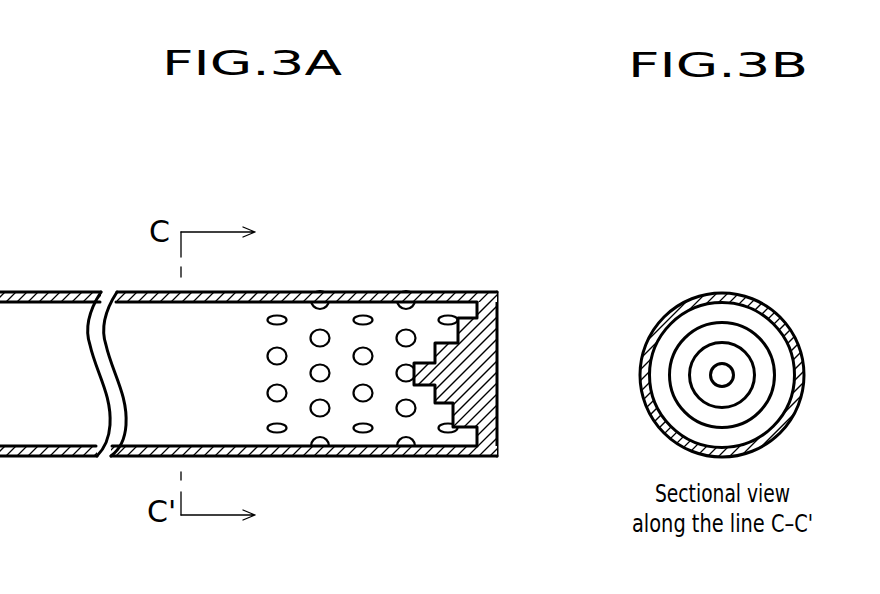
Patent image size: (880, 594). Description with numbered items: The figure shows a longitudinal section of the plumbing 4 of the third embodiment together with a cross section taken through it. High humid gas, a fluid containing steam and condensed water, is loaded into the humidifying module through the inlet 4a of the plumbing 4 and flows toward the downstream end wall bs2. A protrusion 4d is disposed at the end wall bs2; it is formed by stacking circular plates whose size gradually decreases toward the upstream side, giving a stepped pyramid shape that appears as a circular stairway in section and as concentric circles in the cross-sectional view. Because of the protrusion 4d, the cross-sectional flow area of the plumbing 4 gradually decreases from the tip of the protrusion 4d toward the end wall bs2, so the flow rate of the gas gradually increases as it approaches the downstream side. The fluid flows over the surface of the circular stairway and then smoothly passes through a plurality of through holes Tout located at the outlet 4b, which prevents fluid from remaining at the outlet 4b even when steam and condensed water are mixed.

In FIG. 3A, the plumbing 4 is at (336, 369).
In FIG. 3A, the inlet 4a is at (45, 317).
In FIG. 3A, the outlet 4b is at (362, 349).
In FIG. 3A, the protrusion 4d is at (472, 345).
In FIG. 3B, the protrusion 4d is at (685, 303).
In FIG. 3A, the through holes Tout is at (342, 266).
In FIG. 3A, the end wall bs2 is at (497, 395).